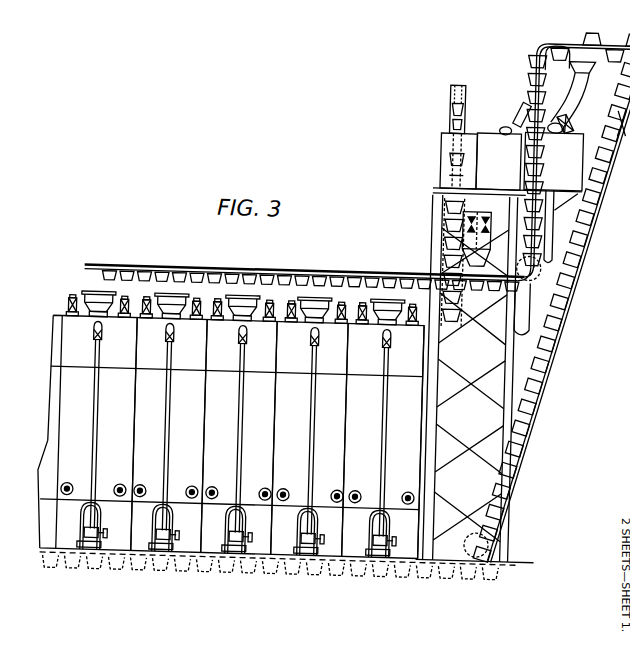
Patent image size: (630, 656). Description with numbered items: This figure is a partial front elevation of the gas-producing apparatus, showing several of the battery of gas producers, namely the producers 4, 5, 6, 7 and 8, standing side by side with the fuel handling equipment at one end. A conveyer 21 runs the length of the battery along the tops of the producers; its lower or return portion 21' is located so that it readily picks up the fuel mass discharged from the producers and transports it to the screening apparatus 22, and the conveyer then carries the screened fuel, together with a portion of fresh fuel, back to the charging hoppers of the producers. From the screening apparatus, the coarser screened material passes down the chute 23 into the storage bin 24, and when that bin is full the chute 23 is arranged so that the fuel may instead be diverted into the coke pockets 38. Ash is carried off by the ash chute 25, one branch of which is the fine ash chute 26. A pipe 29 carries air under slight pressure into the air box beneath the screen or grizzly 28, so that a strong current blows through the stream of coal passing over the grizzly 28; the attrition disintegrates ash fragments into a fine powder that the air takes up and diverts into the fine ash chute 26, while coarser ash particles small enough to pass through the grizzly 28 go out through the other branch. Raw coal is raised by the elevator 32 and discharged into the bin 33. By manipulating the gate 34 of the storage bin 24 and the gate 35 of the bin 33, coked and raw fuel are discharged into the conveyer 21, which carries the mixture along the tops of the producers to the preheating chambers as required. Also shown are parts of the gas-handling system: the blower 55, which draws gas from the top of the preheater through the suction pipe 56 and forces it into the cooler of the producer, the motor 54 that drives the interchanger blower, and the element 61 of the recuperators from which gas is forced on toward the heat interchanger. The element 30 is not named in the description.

The gas producer 4 is at (96, 432).
The gas producer 5 is at (169, 435).
The gas producer 6 is at (239, 437).
The gas producer 7 is at (309, 438).
The gas producer 8 is at (383, 440).
The conveyer 21 is at (304, 268).
The lower or return portion of conveyer 21' is at (270, 579).
The screening apparatus 22 is at (572, 95).
The chute for the screened material 23 is at (493, 123).
The storage bin 24 is at (499, 161).
The ash chute 25 is at (524, 300).
The fine ash chute 26 is at (510, 104).
The screen or grizzly 28 is at (566, 115).
The pipe 29 is at (549, 129).
The elevator head 30 is at (566, 50).
The elevator 32 is at (451, 82).
The bin 33 is at (434, 157).
The gate 34 is at (505, 192).
The gate 35 is at (455, 241).
The coke pockets 38 is at (554, 161).
The motor 54 is at (121, 490).
The positive pressure blower 55 is at (160, 556).
The suction pipe 56 is at (100, 336).
The recuperator element 61 is at (69, 303).